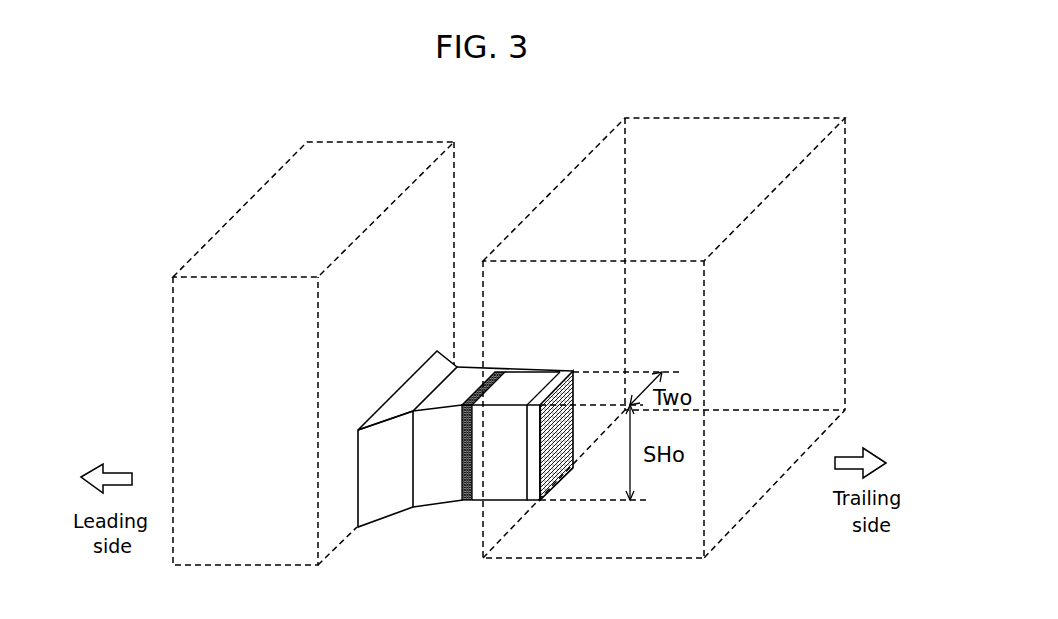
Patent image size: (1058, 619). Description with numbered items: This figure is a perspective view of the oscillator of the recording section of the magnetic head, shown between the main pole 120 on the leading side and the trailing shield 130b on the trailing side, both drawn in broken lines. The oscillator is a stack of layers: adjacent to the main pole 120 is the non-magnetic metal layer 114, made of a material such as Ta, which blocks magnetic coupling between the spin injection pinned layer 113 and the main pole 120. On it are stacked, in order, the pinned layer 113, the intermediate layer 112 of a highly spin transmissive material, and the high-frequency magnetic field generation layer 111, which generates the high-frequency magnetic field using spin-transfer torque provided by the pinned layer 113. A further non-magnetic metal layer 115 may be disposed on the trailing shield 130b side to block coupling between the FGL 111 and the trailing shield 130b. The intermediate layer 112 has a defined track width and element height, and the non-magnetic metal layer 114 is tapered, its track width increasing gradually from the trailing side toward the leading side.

The high-frequency magnetic field generation layer 111 is at (522, 382).
The intermediate layer 112 is at (467, 500).
The spin injection pinned layer 113 is at (432, 497).
The non-magnetic metal layer 114 is at (403, 398).
The non-magnetic metal layer 115 is at (560, 378).
The main pole 120 is at (295, 220).
The trailing shield 130b is at (680, 195).